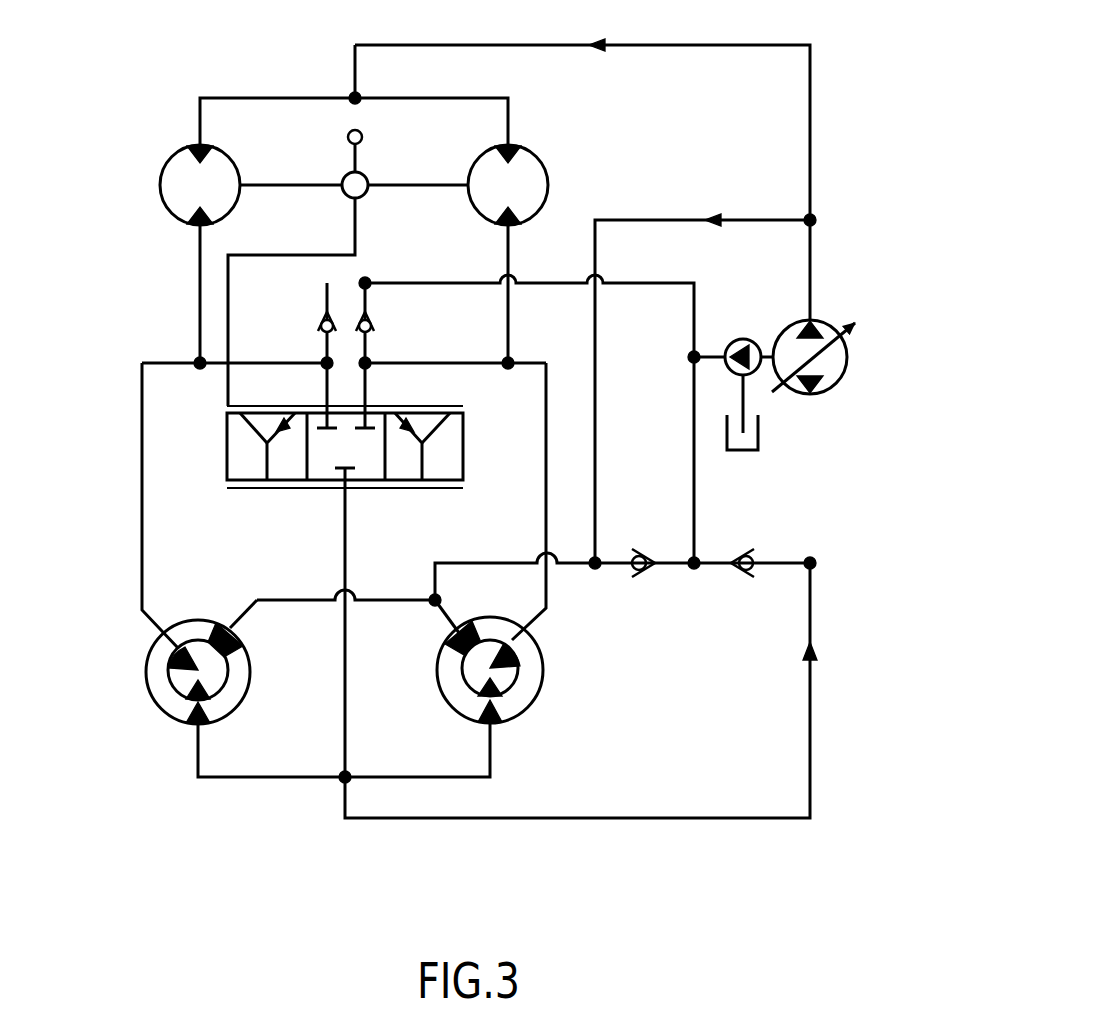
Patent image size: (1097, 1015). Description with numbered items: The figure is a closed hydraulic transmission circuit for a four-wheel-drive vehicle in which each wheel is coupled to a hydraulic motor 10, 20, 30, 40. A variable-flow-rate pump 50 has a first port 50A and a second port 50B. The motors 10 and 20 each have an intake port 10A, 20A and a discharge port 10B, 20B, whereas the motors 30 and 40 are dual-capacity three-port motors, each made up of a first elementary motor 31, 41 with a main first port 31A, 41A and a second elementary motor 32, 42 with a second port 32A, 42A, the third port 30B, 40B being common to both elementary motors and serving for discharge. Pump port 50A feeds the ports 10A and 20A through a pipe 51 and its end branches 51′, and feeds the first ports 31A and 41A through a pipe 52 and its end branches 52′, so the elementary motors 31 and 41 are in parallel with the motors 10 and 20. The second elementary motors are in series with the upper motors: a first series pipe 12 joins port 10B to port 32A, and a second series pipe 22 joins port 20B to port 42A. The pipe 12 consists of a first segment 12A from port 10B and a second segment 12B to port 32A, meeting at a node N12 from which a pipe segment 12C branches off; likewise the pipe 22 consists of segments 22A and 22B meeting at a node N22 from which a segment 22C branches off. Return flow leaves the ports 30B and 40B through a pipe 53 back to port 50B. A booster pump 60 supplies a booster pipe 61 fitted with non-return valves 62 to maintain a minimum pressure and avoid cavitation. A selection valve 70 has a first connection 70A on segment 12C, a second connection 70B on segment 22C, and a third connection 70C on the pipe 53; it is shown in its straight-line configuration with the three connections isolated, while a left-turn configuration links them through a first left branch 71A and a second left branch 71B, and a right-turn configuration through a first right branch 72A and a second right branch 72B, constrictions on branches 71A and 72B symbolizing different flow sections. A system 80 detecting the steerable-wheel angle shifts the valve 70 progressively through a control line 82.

The hydraulic motor 10 is at (164, 185).
The port 10A is at (204, 150).
The second port 10B is at (207, 214).
The hydraulic motor 20 is at (527, 186).
The port 20A is at (511, 150).
The second port 20B is at (510, 216).
The system for detecting the angular positions of the steerable wheels 80 is at (375, 198).
The control line 82 is at (230, 306).
The pipe 51 is at (694, 44).
The end branches 51′ is at (318, 97).
The pipe 52 is at (625, 220).
The end branches 52′ is at (383, 598).
The pipe 53 is at (660, 820).
The first series pipe 12 is at (137, 405).
The first segment 12A is at (200, 307).
The second segment 12B is at (142, 477).
The pipe segment 12C is at (243, 362).
The node N12 is at (198, 362).
The second series pipe 22 is at (552, 425).
The first segment 22A is at (510, 322).
The second segment 22B is at (546, 477).
The pipe segment 22C is at (440, 362).
The node N22 is at (508, 366).
The booster pipe 61 is at (693, 320).
The non-return valves 62 is at (373, 322).
The booster pump 60 is at (757, 340).
The pump 50 is at (848, 357).
The first port 50A is at (817, 322).
The second port 50B is at (820, 392).
The selection valve 70 is at (216, 405).
The first connection 70A is at (319, 407).
The second connection 70B is at (375, 408).
The third connection 70C is at (355, 486).
The first left branch 71A is at (422, 485).
The second left branch 71B is at (445, 420).
The first right branch 72A is at (240, 428).
The second right branch 72B is at (287, 488).
The hydraulic motor 30 is at (120, 719).
The third port 30B is at (195, 718).
The first elementary motor 31 is at (199, 620).
The main first port 31A is at (233, 640).
The second elementary motor 32 is at (225, 692).
The second port 32A is at (178, 655).
The hydraulic motor 40 is at (558, 683).
The third port 40B is at (493, 724).
The first elementary motor 41 is at (545, 665).
The main first port 41A is at (455, 640).
The second elementary motor 42 is at (460, 687).
The second port 42A is at (512, 652).